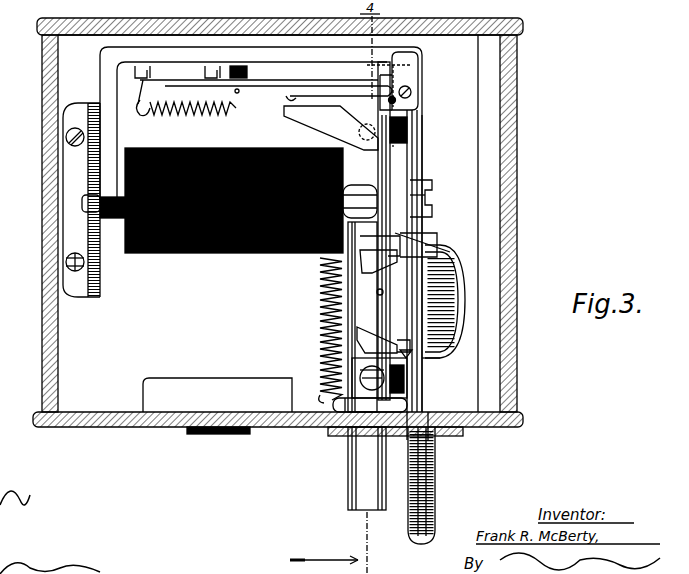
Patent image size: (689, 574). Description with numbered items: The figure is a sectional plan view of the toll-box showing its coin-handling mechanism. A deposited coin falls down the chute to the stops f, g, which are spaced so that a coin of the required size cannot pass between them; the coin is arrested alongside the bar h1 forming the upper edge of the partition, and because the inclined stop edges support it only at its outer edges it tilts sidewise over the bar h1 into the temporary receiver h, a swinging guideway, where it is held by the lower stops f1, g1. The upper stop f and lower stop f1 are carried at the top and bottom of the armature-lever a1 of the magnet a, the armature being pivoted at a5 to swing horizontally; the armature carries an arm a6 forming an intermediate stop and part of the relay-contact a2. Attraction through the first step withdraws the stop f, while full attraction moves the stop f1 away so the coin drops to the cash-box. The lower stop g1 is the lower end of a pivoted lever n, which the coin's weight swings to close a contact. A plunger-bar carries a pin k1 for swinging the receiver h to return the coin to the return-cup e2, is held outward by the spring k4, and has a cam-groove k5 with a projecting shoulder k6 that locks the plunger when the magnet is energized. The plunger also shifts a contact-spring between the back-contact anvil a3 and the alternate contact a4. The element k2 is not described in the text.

The magnet a is at (208, 253).
The armature-lever a1 is at (283, 86).
The relay-contact a2 is at (291, 98).
The back-contact anvil a3 is at (187, 120).
The alternate contact a4 is at (384, 170).
The armature pivot a5 is at (411, 93).
The arm a6 is at (331, 128).
The clamp bracket k2 is at (438, 216).
The lower stop f1 is at (372, 270).
The upper stop f is at (450, 254).
The lower stop g1 is at (413, 334).
The stop g is at (430, 358).
The bar h1 is at (410, 297).
The pivoted lever n is at (400, 387).
The cam-groove k5 is at (326, 268).
The pin k1 is at (378, 293).
The spring k4 is at (325, 321).
The temporary receiver h is at (397, 347).
The projecting shoulder k6 is at (346, 493).
The return-cup e2 is at (420, 481).